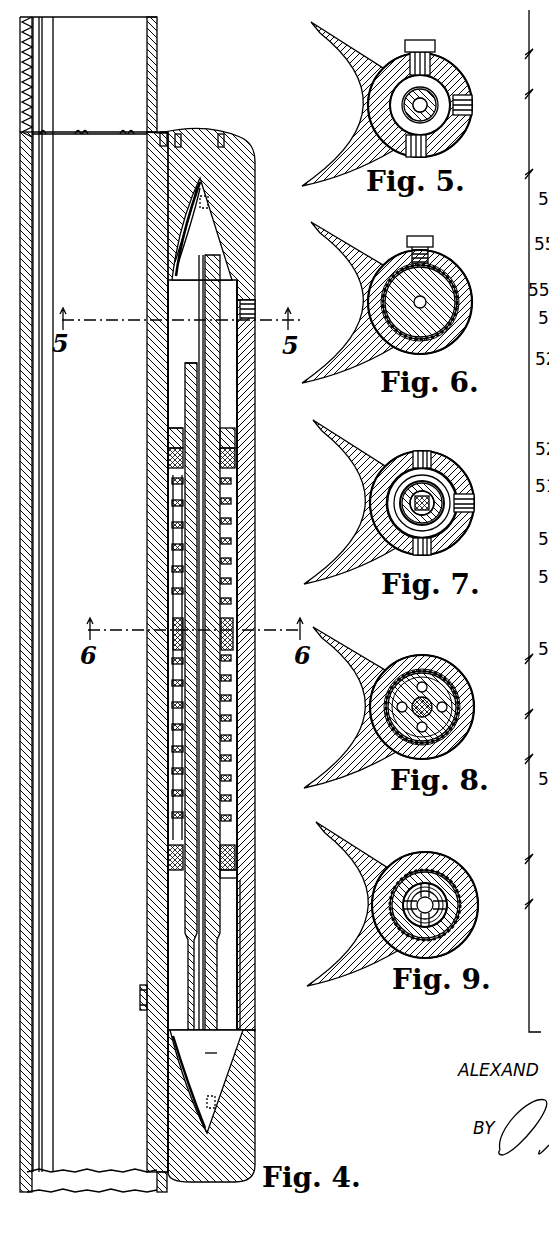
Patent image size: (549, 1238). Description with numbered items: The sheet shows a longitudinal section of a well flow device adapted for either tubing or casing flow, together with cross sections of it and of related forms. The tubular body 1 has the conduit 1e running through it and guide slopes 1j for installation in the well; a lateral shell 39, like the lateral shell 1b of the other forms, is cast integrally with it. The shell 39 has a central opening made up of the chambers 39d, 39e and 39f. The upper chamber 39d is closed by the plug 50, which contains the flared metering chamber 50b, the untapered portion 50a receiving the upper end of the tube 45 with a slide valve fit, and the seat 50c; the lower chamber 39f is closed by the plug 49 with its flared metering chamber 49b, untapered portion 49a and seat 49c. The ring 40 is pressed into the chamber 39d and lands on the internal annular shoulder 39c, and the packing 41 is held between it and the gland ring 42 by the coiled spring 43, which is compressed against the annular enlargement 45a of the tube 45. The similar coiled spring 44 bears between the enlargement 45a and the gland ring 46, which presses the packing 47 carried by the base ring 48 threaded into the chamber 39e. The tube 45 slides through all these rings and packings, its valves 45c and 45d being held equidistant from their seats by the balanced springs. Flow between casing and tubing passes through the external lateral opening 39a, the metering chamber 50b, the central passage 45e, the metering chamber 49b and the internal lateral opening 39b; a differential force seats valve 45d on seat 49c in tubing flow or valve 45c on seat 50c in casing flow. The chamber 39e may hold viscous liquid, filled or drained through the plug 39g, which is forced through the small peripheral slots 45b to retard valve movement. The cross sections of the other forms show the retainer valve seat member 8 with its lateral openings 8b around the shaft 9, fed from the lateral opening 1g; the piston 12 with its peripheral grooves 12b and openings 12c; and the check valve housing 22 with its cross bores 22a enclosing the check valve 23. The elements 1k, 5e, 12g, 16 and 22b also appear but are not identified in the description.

In FIG. 4, the tubular body 1 is at (30, 217).
In FIG. 5, the tubular body 1 is at (340, 28).
In FIG. 6, the tubular body 1 is at (330, 232).
In FIG. 7, the tubular body 1 is at (340, 437).
In FIG. 8, the tubular body 1 is at (340, 642).
In FIG. 9, the tubular body 1 is at (345, 838).
In FIG. 4, the conduit 1e is at (135, 50).
In FIG. 4, the guide slopes 1j is at (183, 130).
In FIG. 7, the lateral shell 1b is at (441, 503).
In FIG. 8, the lateral shell 1b is at (444, 707).
In FIG. 7, the lateral opening 1g is at (488, 505).
In FIG. 7, the key 1k is at (366, 499).
In FIG. 7, the bushing 5e is at (376, 498).
In FIG. 7, the retainer valve seat member 8 is at (447, 516).
In FIG. 7, the lateral openings 8b is at (445, 491).
In FIG. 7, the shaft 9 is at (380, 506).
In FIG. 8, the shaft 9 is at (382, 707).
In FIG. 8, the piston 12 is at (431, 686).
In FIG. 8, the peripheral grooves 12b is at (453, 708).
In FIG. 8, the openings 12c is at (459, 707).
In FIG. 8, the disc teeth 12g is at (449, 715).
In FIG. 9, the housing section 16 is at (443, 905).
In FIG. 9, the check valve housing 22 is at (448, 906).
In FIG. 9, the cross bores 22a is at (465, 905).
In FIG. 9, the gear teeth 22b is at (464, 925).
In FIG. 9, the check valve 23 is at (379, 902).
In FIG. 4, the lateral shell 39 is at (246, 388).
In FIG. 5, the lateral shell 39 is at (435, 105).
In FIG. 6, the lateral shell 39 is at (440, 302).
In FIG. 4, the external lateral opening 39a is at (258, 315).
In FIG. 5, the external lateral opening 39a is at (463, 137).
In FIG. 4, the internal lateral opening 39b is at (146, 998).
In FIG. 4, the internal annular shoulder 39c is at (168, 428).
In FIG. 4, the chamber 39d is at (183, 368).
In FIG. 4, the chamber 39e is at (238, 583).
In FIG. 4, the chamber 39f is at (245, 952).
In FIG. 4, the plug 39g is at (233, 638).
In FIG. 5, the plug 39g is at (447, 53).
In FIG. 6, the plug 39g is at (454, 242).
In FIG. 4, the ring 40 is at (172, 440).
In FIG. 5, the ring 40 is at (374, 105).
In FIG. 4, the packing 41 is at (235, 458).
In FIG. 4, the gland ring 42 is at (170, 463).
In FIG. 4, the coiled spring 43 is at (231, 535).
In FIG. 4, the coiled spring 44 is at (231, 770).
In FIG. 4, the tube 45 is at (190, 405).
In FIG. 5, the tube 45 is at (457, 124).
In FIG. 4, the annular enlargement 45a is at (176, 633).
In FIG. 6, the annular enlargement 45a is at (446, 302).
In FIG. 4, the peripheral slots 45b is at (176, 652).
In FIG. 6, the peripheral slots 45b is at (441, 314).
In FIG. 4, the valve 45c is at (180, 262).
In FIG. 4, the valve 45d is at (220, 1050).
In FIG. 4, the central passage 45e is at (198, 312).
In FIG. 5, the central passage 45e is at (364, 96).
In FIG. 6, the central passage 45e is at (468, 302).
In FIG. 4, the gland ring 46 is at (233, 843).
In FIG. 4, the packing 47 is at (170, 853).
In FIG. 4, the base ring 48 is at (237, 862).
In FIG. 4, the plug 49 is at (193, 1145).
In FIG. 4, the untapered portion 49a is at (215, 1105).
In FIG. 4, the flared metering chamber 49b is at (190, 1070).
In FIG. 4, the seat 49c is at (198, 1123).
In FIG. 4, the plug 50 is at (207, 145).
In FIG. 4, the untapered portion 50a is at (206, 205).
In FIG. 4, the flared metering chamber 50b is at (213, 240).
In FIG. 4, the seat 50c is at (192, 186).